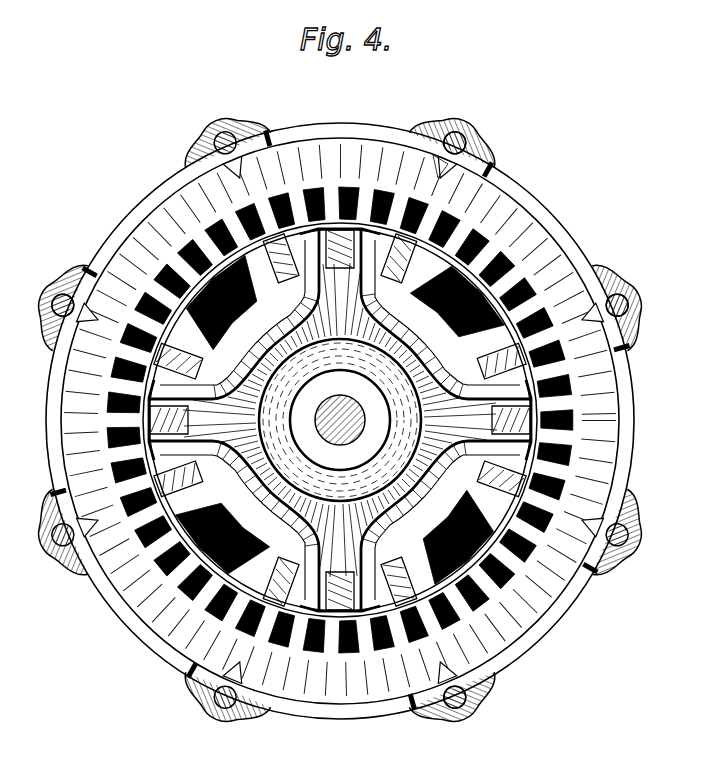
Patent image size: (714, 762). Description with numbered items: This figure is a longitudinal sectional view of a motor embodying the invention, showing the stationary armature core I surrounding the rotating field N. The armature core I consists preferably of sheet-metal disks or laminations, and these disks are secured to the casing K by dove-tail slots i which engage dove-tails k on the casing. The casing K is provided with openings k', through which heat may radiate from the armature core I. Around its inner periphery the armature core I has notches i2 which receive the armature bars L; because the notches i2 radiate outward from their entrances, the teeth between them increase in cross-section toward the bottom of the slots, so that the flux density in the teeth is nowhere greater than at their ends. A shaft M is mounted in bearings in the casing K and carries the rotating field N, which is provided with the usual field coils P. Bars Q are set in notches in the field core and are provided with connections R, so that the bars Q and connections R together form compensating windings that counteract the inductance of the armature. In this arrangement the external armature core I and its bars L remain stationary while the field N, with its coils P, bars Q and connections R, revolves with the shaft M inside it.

The stationary armature core I is at (340, 415).
The casing K is at (438, 132).
The dove-tails k is at (326, 419).
The openings k' is at (340, 421).
The dove-tail slots i is at (444, 166).
The notches i2 is at (546, 346).
The armature bars L is at (122, 372).
The rotating field N is at (132, 526).
The shaft M is at (328, 440).
The field coils P is at (198, 298).
The bars Q is at (262, 243).
The connections R is at (342, 326).